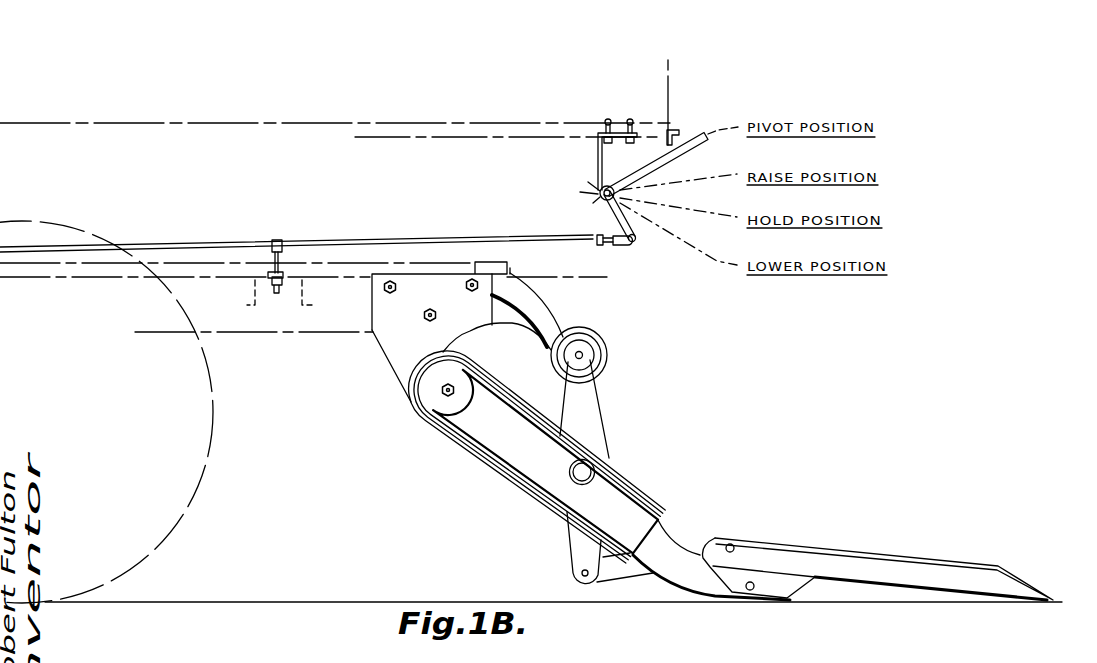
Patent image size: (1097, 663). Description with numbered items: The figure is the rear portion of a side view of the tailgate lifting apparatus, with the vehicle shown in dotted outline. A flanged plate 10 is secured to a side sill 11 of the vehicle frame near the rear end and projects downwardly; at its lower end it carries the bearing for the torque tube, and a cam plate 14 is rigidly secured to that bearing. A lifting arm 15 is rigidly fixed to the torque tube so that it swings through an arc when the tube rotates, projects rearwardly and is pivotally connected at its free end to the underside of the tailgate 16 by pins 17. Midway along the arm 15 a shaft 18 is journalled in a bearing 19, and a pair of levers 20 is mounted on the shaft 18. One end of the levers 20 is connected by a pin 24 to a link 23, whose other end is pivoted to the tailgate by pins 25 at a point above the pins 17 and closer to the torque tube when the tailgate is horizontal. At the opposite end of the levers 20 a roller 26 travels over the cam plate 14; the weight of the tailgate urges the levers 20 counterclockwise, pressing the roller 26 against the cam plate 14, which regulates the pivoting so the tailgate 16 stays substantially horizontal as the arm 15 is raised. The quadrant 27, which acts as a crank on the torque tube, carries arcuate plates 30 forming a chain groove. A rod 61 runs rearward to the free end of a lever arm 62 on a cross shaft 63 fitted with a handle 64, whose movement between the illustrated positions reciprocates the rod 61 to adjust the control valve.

The flanged plate 10 is at (400, 345).
The sill 11 is at (322, 316).
The cam plate 14 is at (548, 387).
The lifting arm 15 is at (523, 458).
The tailgate 16 is at (830, 552).
The pin 17 is at (751, 590).
The shaft 18 is at (592, 465).
The bearing 19 is at (595, 473).
The lever 20 is at (590, 417).
The link 23 is at (627, 568).
The pin 24 is at (578, 574).
The pin 25 is at (733, 545).
The roller 26 is at (604, 341).
The quadrant 27 is at (503, 313).
The arcuate plate 30 is at (550, 320).
The rod 61 is at (213, 247).
The lever arm 62 is at (615, 217).
The cross shaft 63 is at (600, 194).
The handle 64 is at (655, 165).